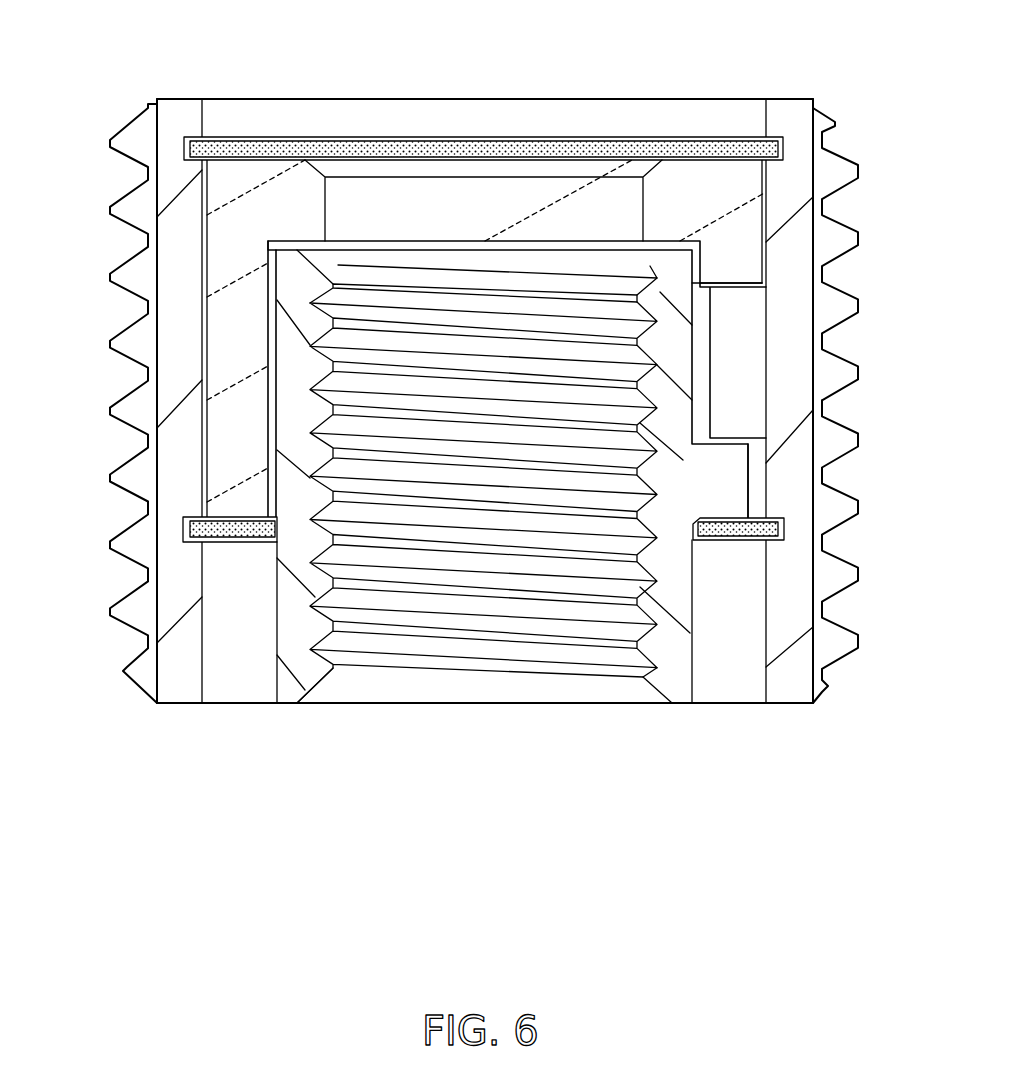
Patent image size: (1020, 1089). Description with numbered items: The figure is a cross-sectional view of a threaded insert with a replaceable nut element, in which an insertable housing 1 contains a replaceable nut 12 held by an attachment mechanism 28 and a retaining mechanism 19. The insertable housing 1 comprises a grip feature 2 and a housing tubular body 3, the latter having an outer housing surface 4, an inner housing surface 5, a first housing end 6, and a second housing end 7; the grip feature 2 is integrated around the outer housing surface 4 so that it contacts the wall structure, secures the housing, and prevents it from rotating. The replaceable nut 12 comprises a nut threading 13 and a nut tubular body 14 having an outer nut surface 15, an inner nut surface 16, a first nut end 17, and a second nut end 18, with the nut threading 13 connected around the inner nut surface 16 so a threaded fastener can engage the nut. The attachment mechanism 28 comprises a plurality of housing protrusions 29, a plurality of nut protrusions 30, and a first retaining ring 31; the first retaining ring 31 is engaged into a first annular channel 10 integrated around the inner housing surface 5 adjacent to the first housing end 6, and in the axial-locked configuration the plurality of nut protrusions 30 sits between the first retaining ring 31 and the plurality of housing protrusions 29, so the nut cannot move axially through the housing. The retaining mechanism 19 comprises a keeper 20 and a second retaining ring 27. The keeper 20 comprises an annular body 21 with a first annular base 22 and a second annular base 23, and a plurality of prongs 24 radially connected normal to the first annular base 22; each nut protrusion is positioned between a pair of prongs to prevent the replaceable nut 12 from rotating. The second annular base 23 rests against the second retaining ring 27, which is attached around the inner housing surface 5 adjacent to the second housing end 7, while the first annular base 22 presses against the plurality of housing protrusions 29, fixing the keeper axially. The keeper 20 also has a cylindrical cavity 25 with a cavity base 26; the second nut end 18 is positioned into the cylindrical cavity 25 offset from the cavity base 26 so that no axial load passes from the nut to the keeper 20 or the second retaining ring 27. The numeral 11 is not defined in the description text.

The insertable housing 1 is at (495, 373).
The grip feature 2 is at (118, 478).
The housing tubular body 3 is at (495, 373).
The outer housing surface 4 is at (157, 122).
The inner housing surface 5 is at (204, 118).
The first housing end 6 is at (484, 733).
The second housing end 7 is at (476, 98).
The first annular channel 10 is at (786, 530).
The upper sealing ring 11 is at (535, 92).
The replaceable nut 12 is at (240, 709).
The nut threading 13 is at (665, 664).
The nut tubular body 14 is at (292, 671).
The outer nut surface 15 is at (275, 565).
The inner nut surface 16 is at (640, 645).
The first nut end 17 is at (511, 705).
The second nut end 18 is at (477, 472).
The retaining mechanism 19 is at (535, 92).
The keeper 20 is at (875, 405).
The annular body 21 is at (790, 178).
The first annular base 22 is at (341, 244).
The second annular base 23 is at (785, 148).
The plurality of prongs 24 is at (213, 365).
The cylindrical cavity 25 is at (695, 279).
The cavity base 26 is at (790, 278).
The second retaining ring 27 is at (535, 92).
The attachment mechanism 28 is at (733, 440).
The plurality of housing protrusions 29 is at (755, 292).
The plurality of nut protrusions 30 is at (735, 455).
The first retaining ring 31 is at (752, 532).